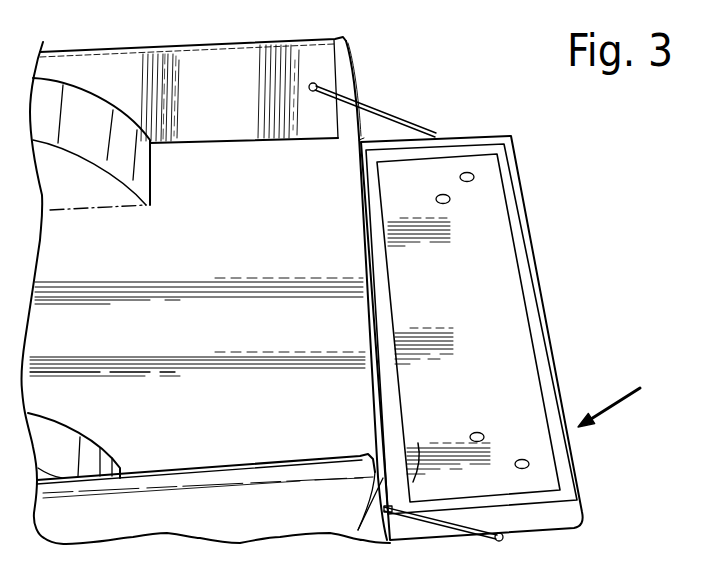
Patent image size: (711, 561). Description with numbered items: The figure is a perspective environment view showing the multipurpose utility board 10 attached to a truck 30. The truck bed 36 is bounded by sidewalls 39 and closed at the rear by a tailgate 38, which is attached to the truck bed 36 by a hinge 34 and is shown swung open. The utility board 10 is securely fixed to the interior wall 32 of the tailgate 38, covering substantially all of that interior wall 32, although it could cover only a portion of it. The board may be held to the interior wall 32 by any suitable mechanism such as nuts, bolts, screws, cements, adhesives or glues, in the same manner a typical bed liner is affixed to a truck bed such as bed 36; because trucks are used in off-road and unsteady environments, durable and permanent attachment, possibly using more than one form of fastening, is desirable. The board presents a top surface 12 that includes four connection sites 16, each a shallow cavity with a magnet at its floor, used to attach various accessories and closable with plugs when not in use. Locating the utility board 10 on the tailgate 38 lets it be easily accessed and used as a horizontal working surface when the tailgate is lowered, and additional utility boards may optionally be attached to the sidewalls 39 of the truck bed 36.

The multipurpose utility board 10 is at (557, 217).
The top surface 12 is at (403, 318).
The connection sites 16 is at (437, 196).
The truck 30 is at (406, 72).
The interior wall 32 is at (572, 517).
The hinge 34 is at (360, 172).
The truck bed 36 is at (169, 261).
The tailgate 38 is at (620, 401).
The sidewalls 39 is at (240, 115).